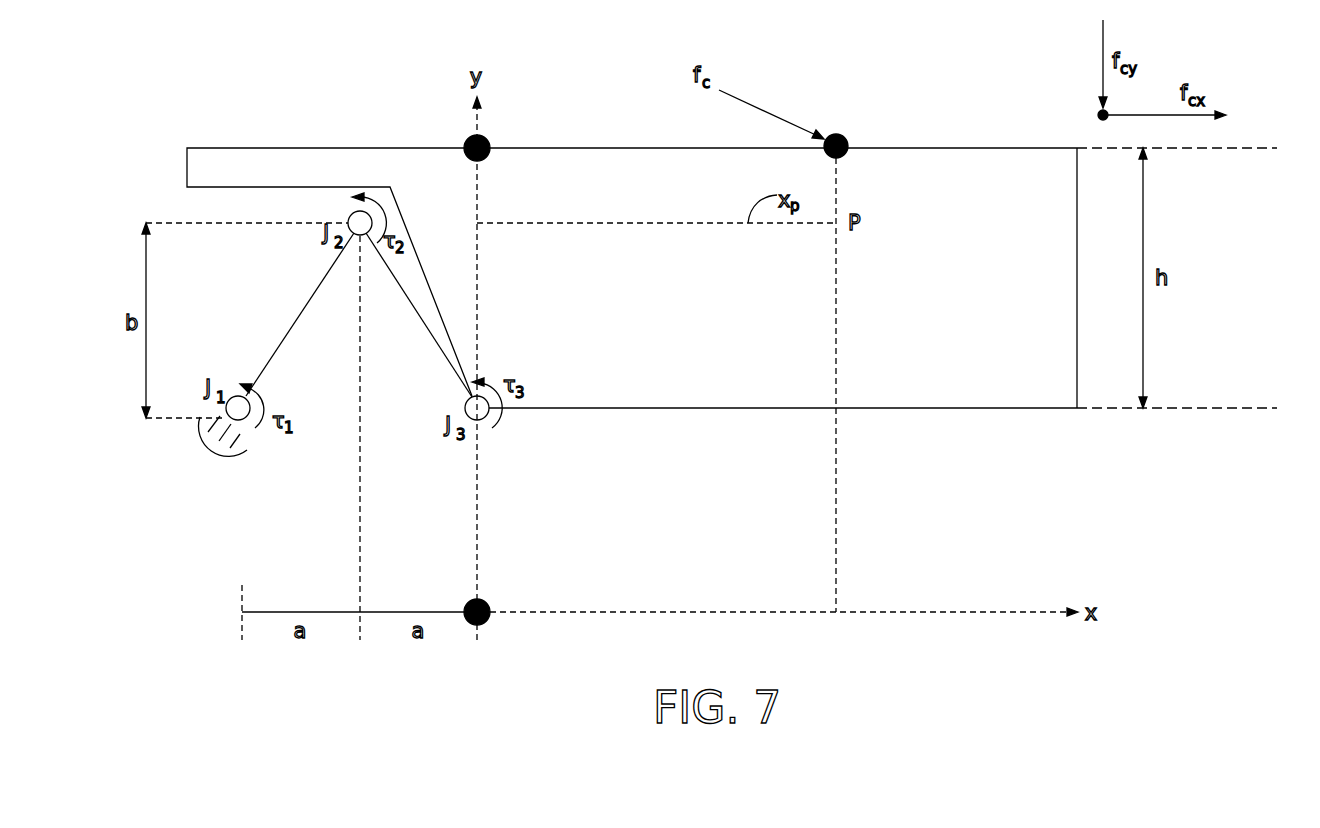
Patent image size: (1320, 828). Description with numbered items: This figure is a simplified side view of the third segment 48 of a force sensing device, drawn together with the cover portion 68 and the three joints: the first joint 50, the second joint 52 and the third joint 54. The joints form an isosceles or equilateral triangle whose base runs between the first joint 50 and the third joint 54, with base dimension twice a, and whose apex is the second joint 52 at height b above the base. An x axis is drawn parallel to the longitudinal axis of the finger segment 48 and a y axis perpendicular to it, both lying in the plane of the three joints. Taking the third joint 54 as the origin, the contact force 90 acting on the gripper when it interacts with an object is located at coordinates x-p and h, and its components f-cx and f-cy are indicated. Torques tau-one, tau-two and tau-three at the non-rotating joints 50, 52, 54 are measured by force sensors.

The third segment 48 is at (943, 392).
The first joint 50 is at (217, 380).
The second joint 52 is at (313, 237).
The third joint 54 is at (455, 437).
The cover portion 68 is at (248, 160).
The contact force 90 is at (690, 70).